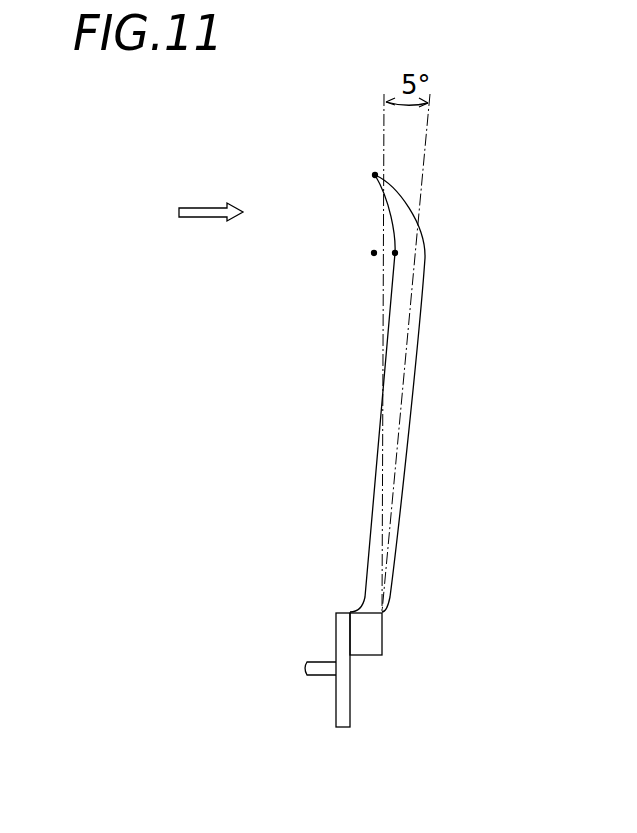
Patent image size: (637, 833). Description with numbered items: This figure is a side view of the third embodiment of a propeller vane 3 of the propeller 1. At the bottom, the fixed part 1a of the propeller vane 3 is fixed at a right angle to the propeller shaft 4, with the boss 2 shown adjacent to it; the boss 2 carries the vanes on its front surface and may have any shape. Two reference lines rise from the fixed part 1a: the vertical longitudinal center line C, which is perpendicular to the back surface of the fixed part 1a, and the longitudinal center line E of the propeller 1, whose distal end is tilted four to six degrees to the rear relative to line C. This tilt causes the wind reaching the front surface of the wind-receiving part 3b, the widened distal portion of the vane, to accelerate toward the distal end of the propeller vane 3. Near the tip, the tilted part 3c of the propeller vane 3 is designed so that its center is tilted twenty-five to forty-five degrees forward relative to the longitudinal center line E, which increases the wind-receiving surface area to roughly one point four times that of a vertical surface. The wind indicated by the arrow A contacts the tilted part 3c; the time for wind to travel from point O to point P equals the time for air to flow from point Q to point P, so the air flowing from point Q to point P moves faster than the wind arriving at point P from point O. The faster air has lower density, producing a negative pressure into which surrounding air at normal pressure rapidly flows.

The propeller 1 is at (414, 423).
The fixed part 1a is at (382, 640).
The boss 2 is at (350, 705).
The propeller vane 3 is at (392, 393).
The wind-receiving part 3b is at (381, 402).
The tilted part 3c is at (405, 194).
The propeller shaft 4 is at (318, 678).
The arrow indicating wind A is at (197, 214).
The vertical longitudinal center line C is at (383, 121).
The longitudinal center line E is at (431, 121).
The point O is at (374, 252).
The point P is at (395, 254).
The point Q is at (375, 175).